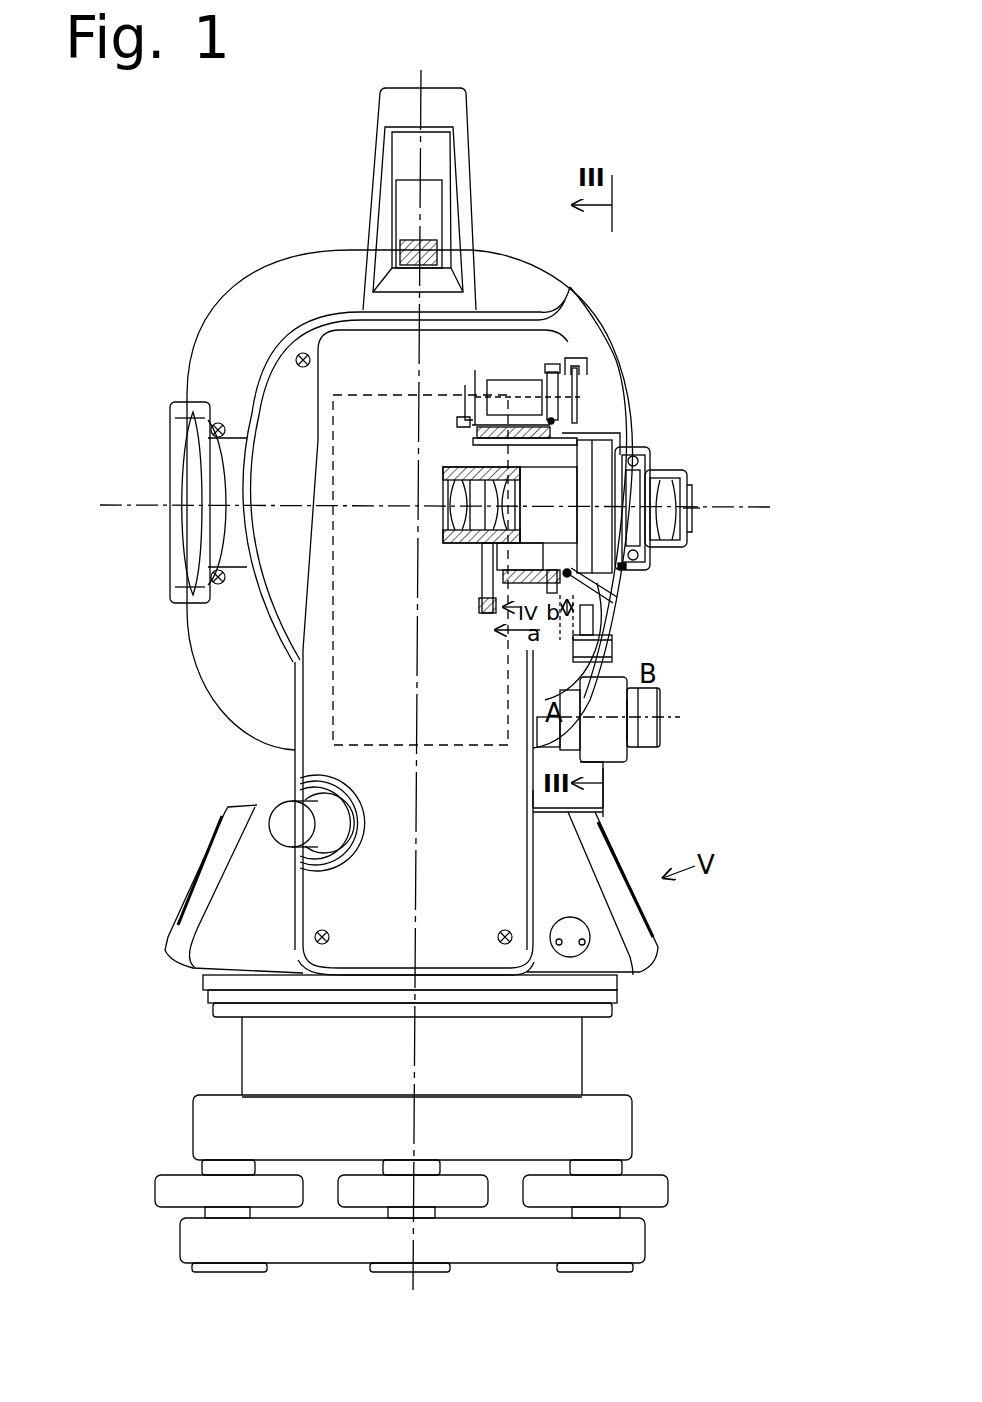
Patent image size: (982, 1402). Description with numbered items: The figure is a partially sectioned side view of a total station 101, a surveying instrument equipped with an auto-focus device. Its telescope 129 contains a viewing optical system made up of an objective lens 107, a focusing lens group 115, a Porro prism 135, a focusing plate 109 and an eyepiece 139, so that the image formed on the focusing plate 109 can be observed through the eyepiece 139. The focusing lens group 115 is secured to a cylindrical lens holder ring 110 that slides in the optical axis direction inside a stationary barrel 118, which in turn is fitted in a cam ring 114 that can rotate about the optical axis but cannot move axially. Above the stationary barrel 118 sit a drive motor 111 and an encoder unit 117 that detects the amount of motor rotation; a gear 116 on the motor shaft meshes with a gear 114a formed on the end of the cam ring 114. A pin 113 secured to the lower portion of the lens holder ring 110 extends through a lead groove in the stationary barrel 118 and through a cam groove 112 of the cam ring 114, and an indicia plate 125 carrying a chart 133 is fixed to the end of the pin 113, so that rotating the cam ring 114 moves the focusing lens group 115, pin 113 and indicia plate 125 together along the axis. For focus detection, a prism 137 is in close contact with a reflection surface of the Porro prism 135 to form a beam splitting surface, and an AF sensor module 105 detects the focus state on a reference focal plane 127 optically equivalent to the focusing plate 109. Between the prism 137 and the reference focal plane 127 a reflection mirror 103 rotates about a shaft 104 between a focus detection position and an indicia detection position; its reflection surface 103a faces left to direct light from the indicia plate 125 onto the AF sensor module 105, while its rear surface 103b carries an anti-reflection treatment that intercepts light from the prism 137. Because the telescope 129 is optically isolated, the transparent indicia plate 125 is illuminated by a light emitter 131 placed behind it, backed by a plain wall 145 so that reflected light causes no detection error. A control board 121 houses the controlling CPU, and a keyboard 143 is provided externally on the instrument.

The total station 101 is at (630, 132).
The reflection mirror 103 is at (605, 655).
The reflection surface 103a is at (607, 613).
The rear surface 103b is at (590, 600).
The shaft 104 is at (534, 541).
The AF sensor module 105 is at (660, 703).
The objective lens 107 is at (195, 480).
The focusing plate 109 is at (653, 482).
The lens holder ring 110 is at (443, 545).
The drive motor 111 is at (545, 372).
The cam groove 112 is at (516, 430).
The pin 113 is at (478, 612).
The cam ring 114 is at (587, 440).
The gear 114a is at (577, 413).
The focusing lens group 115 is at (445, 490).
The gear 116 is at (585, 372).
The encoder unit 117 is at (612, 395).
The stationary barrel 118 is at (470, 440).
The control board 121 is at (358, 412).
The indicia plate 125 is at (482, 615).
The reference focal plane 127 is at (628, 700).
The telescope 129 is at (609, 779).
The light emitter 131 is at (478, 620).
The chart 133 is at (502, 622).
The Porro prism 135 is at (597, 490).
The prism 137 is at (622, 565).
The eyepiece 139 is at (683, 508).
The keyboard 143 is at (637, 930).
The plain wall 145 is at (460, 667).